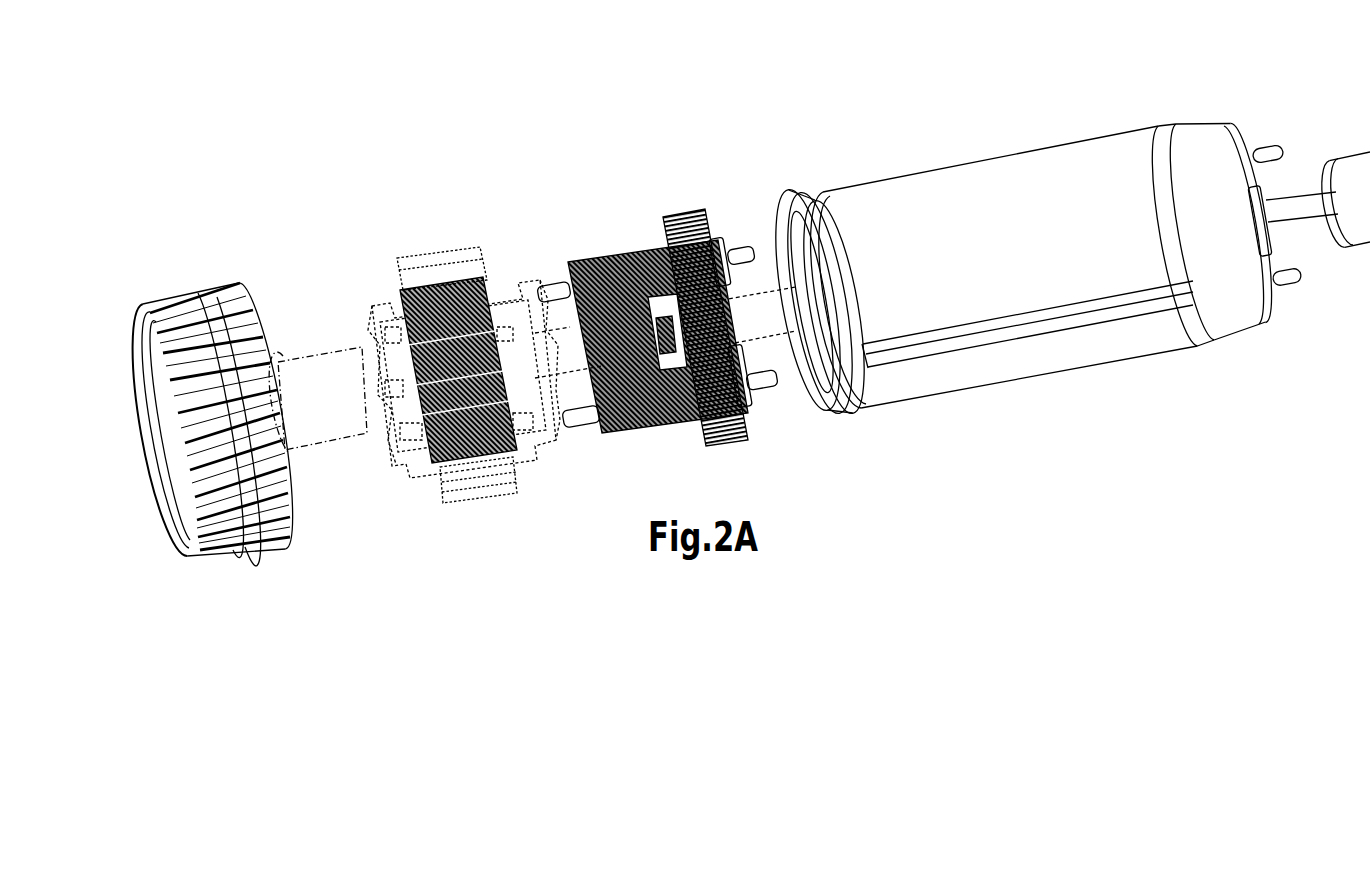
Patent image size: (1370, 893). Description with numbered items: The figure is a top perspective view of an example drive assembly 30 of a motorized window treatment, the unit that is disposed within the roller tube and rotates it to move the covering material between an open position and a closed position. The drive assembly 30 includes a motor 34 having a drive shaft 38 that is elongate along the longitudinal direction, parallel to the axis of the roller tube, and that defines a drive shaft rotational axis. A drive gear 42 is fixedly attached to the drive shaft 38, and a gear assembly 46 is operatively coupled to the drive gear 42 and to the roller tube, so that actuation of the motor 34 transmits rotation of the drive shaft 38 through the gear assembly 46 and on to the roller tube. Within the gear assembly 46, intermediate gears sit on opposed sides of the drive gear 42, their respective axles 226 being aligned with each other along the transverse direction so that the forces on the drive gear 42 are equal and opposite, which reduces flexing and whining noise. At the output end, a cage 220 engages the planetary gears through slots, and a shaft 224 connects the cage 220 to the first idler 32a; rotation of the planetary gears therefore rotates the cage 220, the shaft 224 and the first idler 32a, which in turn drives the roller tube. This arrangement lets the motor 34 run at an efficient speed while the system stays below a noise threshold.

The drive assembly 30 is at (653, 237).
The first idler 32a is at (215, 308).
The motor 34 is at (966, 215).
The drive shaft 38 is at (798, 318).
The drive gear 42 is at (760, 303).
The gear assembly 46 is at (560, 250).
The cage 220 is at (379, 310).
The shaft 224 is at (313, 358).
The axles 226 is at (453, 250).